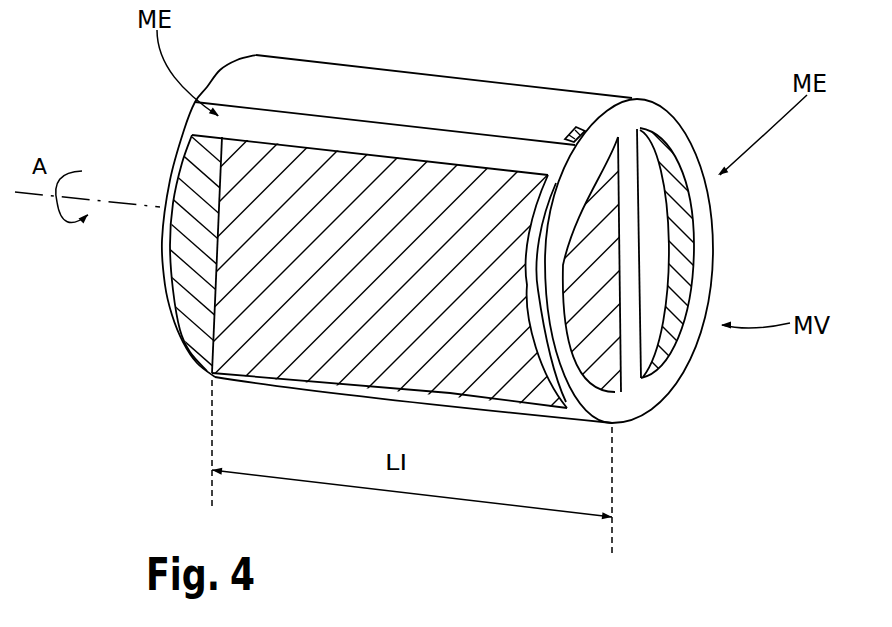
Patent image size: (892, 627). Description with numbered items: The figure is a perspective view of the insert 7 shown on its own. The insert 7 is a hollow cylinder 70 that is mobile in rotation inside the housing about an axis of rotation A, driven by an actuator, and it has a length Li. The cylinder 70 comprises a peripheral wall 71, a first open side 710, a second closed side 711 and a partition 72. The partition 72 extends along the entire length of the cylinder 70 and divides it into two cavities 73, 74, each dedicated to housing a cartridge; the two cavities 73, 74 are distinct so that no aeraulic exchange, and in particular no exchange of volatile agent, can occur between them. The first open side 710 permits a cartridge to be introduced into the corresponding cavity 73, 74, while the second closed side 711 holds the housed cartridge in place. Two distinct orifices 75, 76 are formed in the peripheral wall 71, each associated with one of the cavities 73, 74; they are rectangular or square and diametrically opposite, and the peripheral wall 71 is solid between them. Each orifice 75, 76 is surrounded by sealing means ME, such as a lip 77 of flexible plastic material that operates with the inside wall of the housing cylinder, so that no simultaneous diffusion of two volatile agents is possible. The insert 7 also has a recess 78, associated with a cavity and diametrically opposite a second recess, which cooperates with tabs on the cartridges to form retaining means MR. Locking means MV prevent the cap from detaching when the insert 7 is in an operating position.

The insert 7 is at (112, 352).
The hollow cylinder 70 is at (685, 357).
The peripheral wall 71 is at (430, 97).
The partition 72 is at (346, 190).
The cavity 73 is at (321, 329).
The cavity 74 is at (680, 235).
The orifice 75 is at (460, 163).
The orifice 76 is at (663, 198).
The lip 77 is at (283, 130).
The recess 78 is at (573, 130).
The first open side 710 is at (735, 192).
The second closed side 711 is at (197, 182).